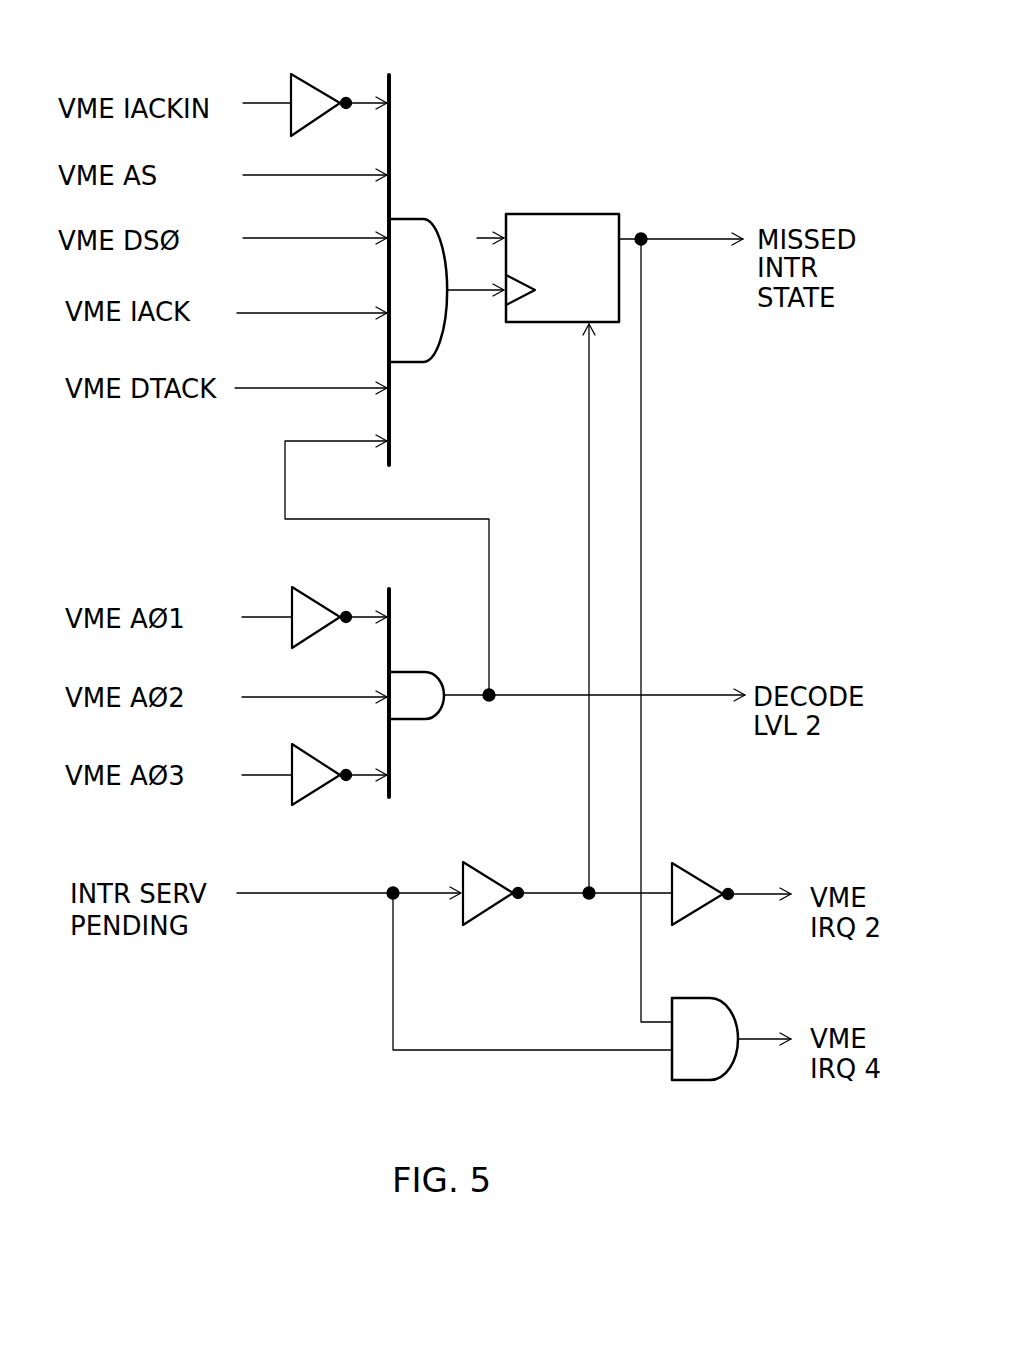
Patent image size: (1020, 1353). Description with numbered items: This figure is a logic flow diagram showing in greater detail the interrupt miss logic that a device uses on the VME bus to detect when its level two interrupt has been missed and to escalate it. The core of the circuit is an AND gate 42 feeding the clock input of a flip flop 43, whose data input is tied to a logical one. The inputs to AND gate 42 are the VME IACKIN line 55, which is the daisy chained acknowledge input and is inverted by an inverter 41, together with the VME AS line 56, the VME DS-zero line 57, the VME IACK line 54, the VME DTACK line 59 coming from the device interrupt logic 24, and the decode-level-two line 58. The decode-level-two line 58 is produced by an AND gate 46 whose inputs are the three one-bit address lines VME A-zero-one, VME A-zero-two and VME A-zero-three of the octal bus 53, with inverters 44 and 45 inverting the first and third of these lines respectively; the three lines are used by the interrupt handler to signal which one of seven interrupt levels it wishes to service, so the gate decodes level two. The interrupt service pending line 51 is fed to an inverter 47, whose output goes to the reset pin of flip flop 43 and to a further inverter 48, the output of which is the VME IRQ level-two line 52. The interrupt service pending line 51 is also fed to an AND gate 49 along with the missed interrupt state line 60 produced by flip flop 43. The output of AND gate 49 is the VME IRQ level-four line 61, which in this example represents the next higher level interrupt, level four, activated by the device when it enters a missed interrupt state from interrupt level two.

The device interrupt logic 24 is at (328, 945).
The inverter 41 is at (302, 93).
The AND gate 42 is at (420, 330).
The flip flop 43 is at (563, 226).
The inverter 44 is at (305, 603).
The inverter 45 is at (305, 762).
The AND gate 46 is at (405, 677).
The inverter 47 is at (475, 878).
The inverter 48 is at (680, 878).
The AND gate 49 is at (707, 1017).
The INTR SERV PENDING line 51 is at (303, 892).
The VME IRQ 2 line 52 is at (752, 896).
The VME A01, VME A02, VME A03 octal bus 53 is at (250, 777).
The VME IACK line 54 is at (275, 316).
The VME IACKIN line 55 is at (250, 107).
The VME AS line 56 is at (284, 178).
The VME DS0 line 57 is at (280, 240).
The DECODE LVL 2 line 58 is at (523, 693).
The VME DTACK line 59 is at (332, 390).
The MISSED INTR STATE line 60 is at (690, 241).
The VME IRQ 4 line 61 is at (753, 1042).